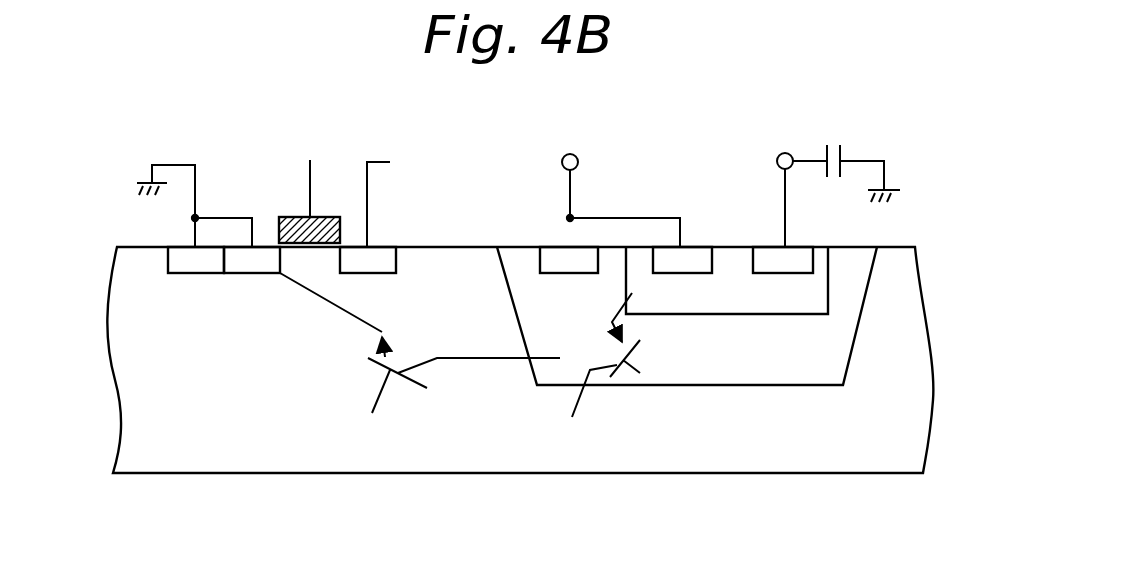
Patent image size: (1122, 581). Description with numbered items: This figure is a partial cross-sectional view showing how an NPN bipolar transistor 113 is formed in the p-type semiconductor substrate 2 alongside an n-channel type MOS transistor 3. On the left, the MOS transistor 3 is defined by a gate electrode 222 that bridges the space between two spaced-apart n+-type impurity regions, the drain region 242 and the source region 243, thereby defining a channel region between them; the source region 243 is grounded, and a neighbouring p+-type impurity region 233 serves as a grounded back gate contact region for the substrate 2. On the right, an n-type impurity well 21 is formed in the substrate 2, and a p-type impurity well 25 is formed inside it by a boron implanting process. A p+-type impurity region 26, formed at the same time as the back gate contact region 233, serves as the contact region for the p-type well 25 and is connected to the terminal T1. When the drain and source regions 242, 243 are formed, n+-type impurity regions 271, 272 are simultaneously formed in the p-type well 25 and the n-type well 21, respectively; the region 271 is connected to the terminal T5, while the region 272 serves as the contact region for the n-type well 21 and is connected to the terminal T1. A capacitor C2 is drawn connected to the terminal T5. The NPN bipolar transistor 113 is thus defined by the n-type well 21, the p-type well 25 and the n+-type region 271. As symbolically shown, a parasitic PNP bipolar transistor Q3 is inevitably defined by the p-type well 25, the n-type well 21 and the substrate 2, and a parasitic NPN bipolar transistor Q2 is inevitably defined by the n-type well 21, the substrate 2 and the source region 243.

The p-type semiconductor substrate 2 is at (818, 484).
The n-channel type MOS transistor 3 is at (290, 197).
The n-type impurity well 21 is at (835, 353).
The p-type impurity well 25 is at (710, 314).
The p+-type impurity region 26 is at (698, 247).
The NPN bipolar transistor 113 is at (633, 203).
The gate electrode 222 is at (322, 217).
The p+-type impurity region 233 is at (182, 247).
The n+-type drain region 242 is at (385, 247).
The n+-type source region 243 is at (268, 247).
The n+-type impurity region 271 is at (795, 247).
The n+-type impurity region 272 is at (555, 247).
The terminal T1 is at (562, 161).
The terminal T5 is at (777, 161).
The capacitor C2 is at (843, 150).
The parasitic NPN bipolar transistor Q2 is at (372, 378).
The parasitic PNP bipolar transistor Q3 is at (602, 337).